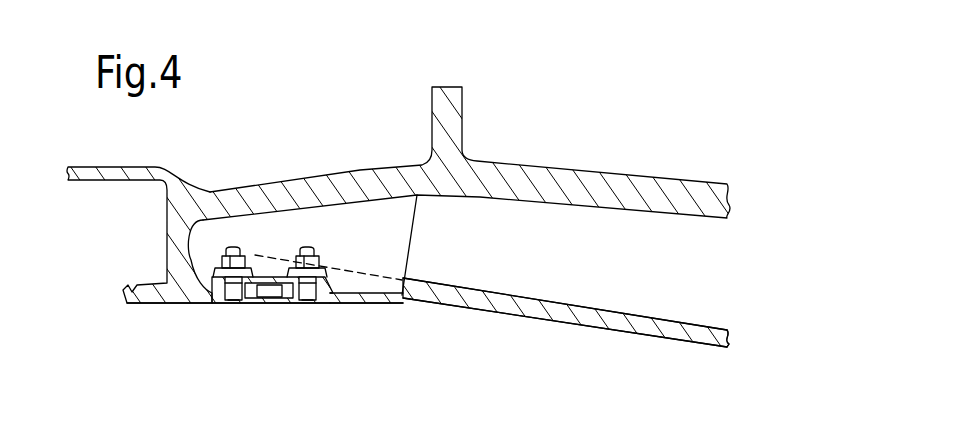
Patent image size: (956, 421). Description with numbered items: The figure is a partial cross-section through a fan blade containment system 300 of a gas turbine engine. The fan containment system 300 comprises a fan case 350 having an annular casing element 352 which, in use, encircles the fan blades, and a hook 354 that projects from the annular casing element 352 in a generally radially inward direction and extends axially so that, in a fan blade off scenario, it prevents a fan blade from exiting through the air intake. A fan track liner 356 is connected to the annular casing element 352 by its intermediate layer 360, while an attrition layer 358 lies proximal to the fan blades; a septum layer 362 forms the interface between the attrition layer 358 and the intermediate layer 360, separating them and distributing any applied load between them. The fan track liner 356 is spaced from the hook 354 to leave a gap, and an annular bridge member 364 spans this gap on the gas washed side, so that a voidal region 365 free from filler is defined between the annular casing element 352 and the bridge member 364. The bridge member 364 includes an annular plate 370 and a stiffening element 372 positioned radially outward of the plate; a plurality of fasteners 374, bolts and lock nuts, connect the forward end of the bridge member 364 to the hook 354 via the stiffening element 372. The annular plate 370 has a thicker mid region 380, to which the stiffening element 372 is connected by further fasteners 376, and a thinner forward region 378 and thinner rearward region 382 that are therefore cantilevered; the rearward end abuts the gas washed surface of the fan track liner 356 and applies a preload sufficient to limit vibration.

The fan containment system 300 is at (618, 122).
The fan case 350 is at (687, 178).
The annular casing element 352 is at (493, 185).
The hook 354 is at (185, 262).
The fan track liner 356 is at (570, 332).
The attrition layer 358 is at (655, 331).
The intermediate layer 360 is at (618, 277).
The septum layer 362 is at (708, 320).
The annular bridge member 364 is at (317, 310).
The voidal region 365 is at (384, 242).
The annular plate 370 is at (352, 304).
The stiffening element 372 is at (258, 303).
The fasteners 374 is at (224, 243).
The fasteners 376 is at (316, 244).
The forward region 378 is at (272, 303).
The mid region 380 is at (289, 303).
The rearward region 382 is at (385, 300).